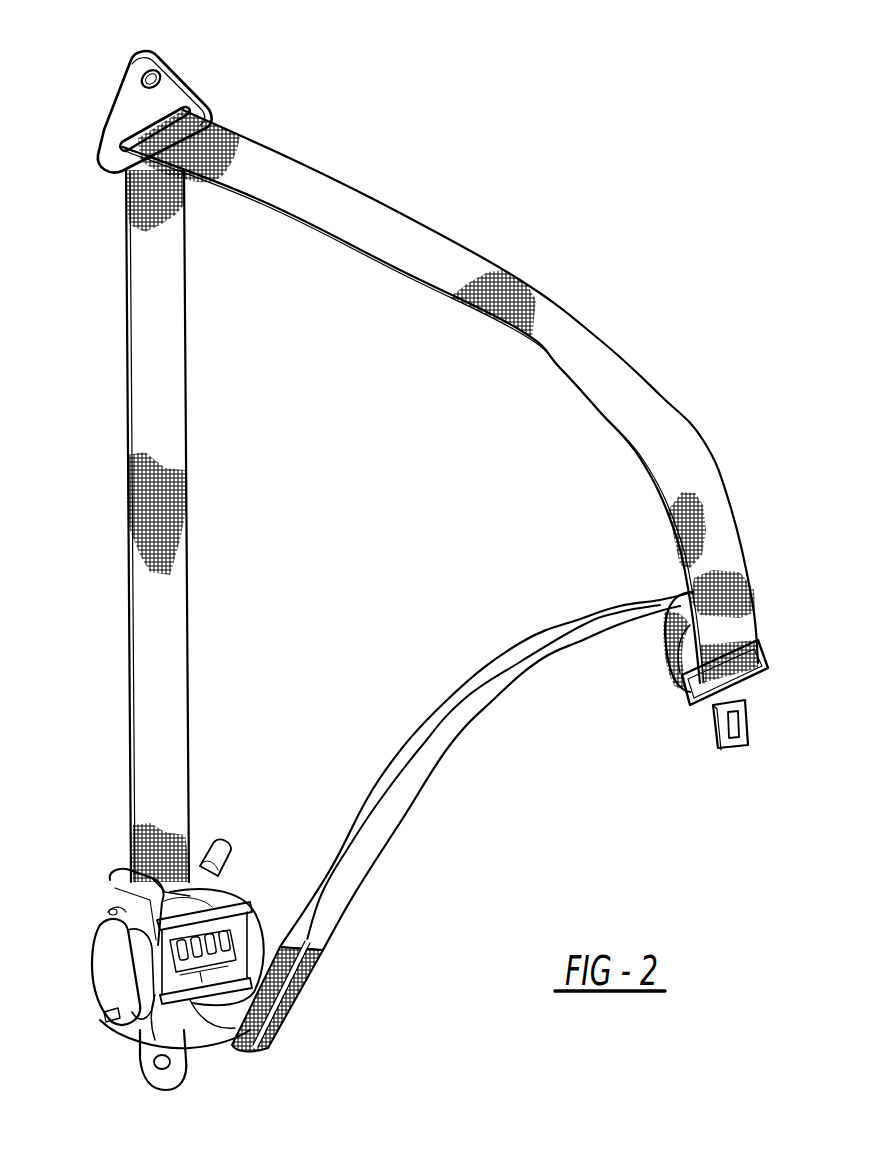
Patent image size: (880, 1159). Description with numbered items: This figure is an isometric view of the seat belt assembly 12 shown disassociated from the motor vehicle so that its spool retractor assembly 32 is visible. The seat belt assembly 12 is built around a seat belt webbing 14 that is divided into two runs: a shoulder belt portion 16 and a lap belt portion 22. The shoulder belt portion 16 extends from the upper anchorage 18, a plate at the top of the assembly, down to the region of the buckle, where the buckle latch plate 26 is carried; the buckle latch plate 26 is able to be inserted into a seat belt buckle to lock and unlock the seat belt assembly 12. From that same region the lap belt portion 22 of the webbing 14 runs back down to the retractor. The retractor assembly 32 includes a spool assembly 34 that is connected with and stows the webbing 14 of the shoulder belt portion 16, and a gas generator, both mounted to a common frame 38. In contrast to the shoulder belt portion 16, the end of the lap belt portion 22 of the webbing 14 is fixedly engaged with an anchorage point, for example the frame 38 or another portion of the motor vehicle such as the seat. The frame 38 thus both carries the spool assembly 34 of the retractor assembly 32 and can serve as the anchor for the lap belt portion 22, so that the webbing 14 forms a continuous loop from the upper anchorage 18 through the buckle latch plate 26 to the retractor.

The seat belt assembly 12 is at (509, 114).
The seat belt webbing 14 is at (756, 615).
The shoulder belt portion 16 is at (709, 449).
The upper anchorage 18 is at (112, 100).
The lap belt portion 22 is at (395, 793).
The buckle latch plate 26 is at (771, 668).
The spool retractor assembly 32 is at (250, 891).
The spool assembly 34 is at (110, 966).
The common frame 38 is at (134, 1051).